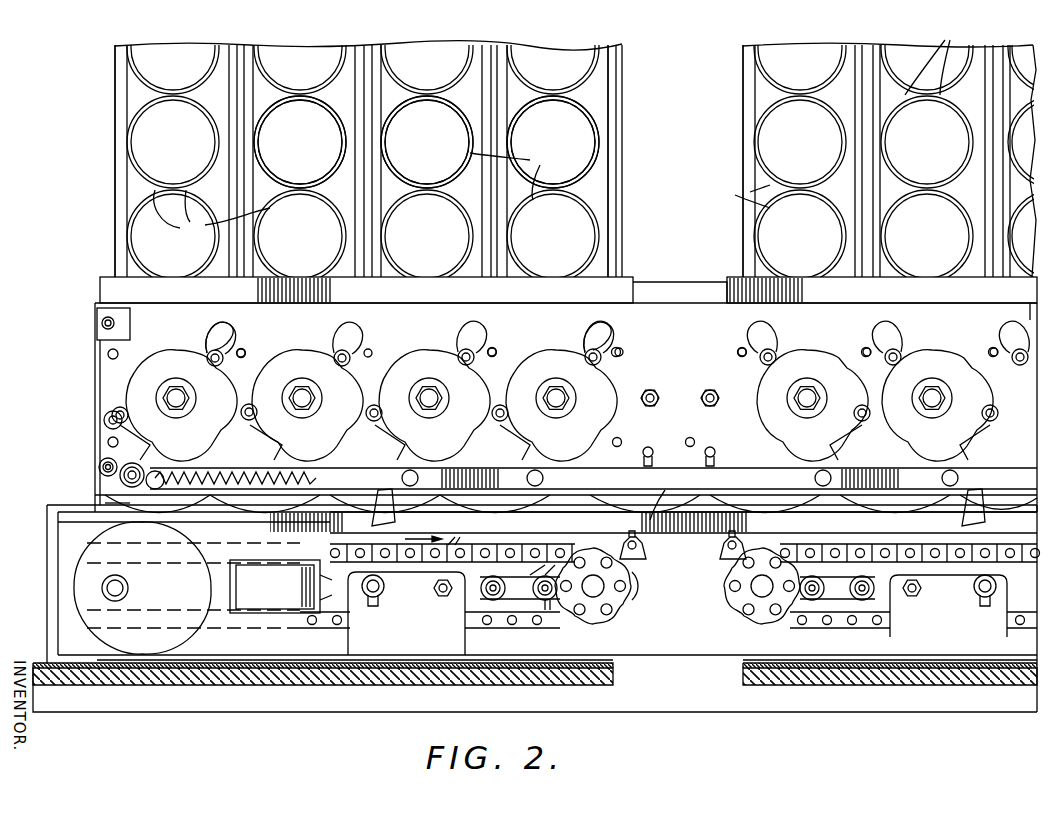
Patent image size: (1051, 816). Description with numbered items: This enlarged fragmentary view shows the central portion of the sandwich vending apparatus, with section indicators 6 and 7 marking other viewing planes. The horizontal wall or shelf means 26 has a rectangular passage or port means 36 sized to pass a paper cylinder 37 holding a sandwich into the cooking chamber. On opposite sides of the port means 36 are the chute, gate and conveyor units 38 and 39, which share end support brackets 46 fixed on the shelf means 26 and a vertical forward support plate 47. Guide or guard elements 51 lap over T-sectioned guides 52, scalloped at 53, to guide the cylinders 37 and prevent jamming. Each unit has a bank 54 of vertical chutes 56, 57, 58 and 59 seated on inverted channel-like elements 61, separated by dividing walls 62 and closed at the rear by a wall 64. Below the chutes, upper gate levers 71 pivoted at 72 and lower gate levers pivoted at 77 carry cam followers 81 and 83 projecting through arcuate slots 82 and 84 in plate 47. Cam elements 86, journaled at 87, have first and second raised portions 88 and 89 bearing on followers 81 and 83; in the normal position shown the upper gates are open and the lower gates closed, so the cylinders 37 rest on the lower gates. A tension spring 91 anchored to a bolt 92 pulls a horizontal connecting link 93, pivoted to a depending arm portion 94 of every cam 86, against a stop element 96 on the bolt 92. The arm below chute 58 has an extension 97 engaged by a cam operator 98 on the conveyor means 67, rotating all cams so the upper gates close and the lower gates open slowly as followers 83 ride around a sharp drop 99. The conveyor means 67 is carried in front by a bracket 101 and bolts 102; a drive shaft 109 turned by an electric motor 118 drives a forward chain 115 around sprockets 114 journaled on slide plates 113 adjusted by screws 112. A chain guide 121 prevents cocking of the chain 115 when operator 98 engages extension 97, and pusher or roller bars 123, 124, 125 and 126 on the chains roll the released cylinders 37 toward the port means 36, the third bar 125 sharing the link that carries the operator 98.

The section line 6- 6 is at (350, 562).
The section line 7- 7 is at (252, 33).
The horizontal wall means 26 is at (930, 675).
The passage or port means 36 is at (740, 687).
The paper cylinder 37 is at (561, 127).
The chute, gate and conveyor unit 38 is at (405, 317).
The chute, gate and conveyor unit 39 is at (818, 317).
The end support brackets 46 is at (100, 446).
The forward support plate 47 is at (105, 366).
The guide or guard element 51 is at (655, 285).
The additional guide or guard elements 52 is at (725, 540).
The scallops 53 is at (520, 492).
The bank of chutes 54 is at (110, 121).
The vertical chute 56 is at (135, 94).
The vertical chute 57 is at (262, 97).
The vertical chute 58 is at (390, 88).
The vertical chute 59 is at (518, 87).
The inverted channel-like elements 61 is at (108, 290).
The vertical dividing walls 62 is at (118, 152).
The rear wall 64 is at (600, 183).
The conveyor means 67 is at (635, 600).
The upper gate levers 71 is at (600, 340).
The pivot 72 is at (492, 348).
The pivot 77 is at (612, 458).
The cam follower 81 is at (215, 366).
The arcuate slot 82 is at (232, 326).
The cam follower 83 is at (110, 408).
The second arcuate slot 84 is at (98, 465).
The cam elements 86 is at (996, 398).
The journal elements 87 is at (176, 395).
The first raised portion 88 is at (225, 378).
The second raised portion 89 is at (140, 427).
The tension spring 91 is at (300, 480).
The bolt 92 is at (118, 480).
The connecting rod or link 93 is at (440, 470).
The depending arm portion 94 is at (800, 462).
The stop element 96 is at (114, 494).
The extension 97 is at (405, 515).
The cam operator or actuator 98 is at (795, 686).
The sharp drop 99 is at (116, 408).
The plate or bracket 101 is at (410, 640).
The bolts 102 is at (443, 598).
The drive shaft 109 is at (128, 588).
The screws 112 is at (493, 600).
The slide plates 113 is at (535, 600).
The sprockets 114 is at (598, 610).
The forward chain 115 is at (505, 545).
The electric motor 118 is at (228, 625).
The chain guide 121 is at (545, 560).
The pusher or roller bar 123 is at (378, 555).
The pusher or roller bar 124 is at (464, 528).
The pusher or roller bar 125 is at (642, 545).
The pusher or roller bar 126 is at (570, 650).